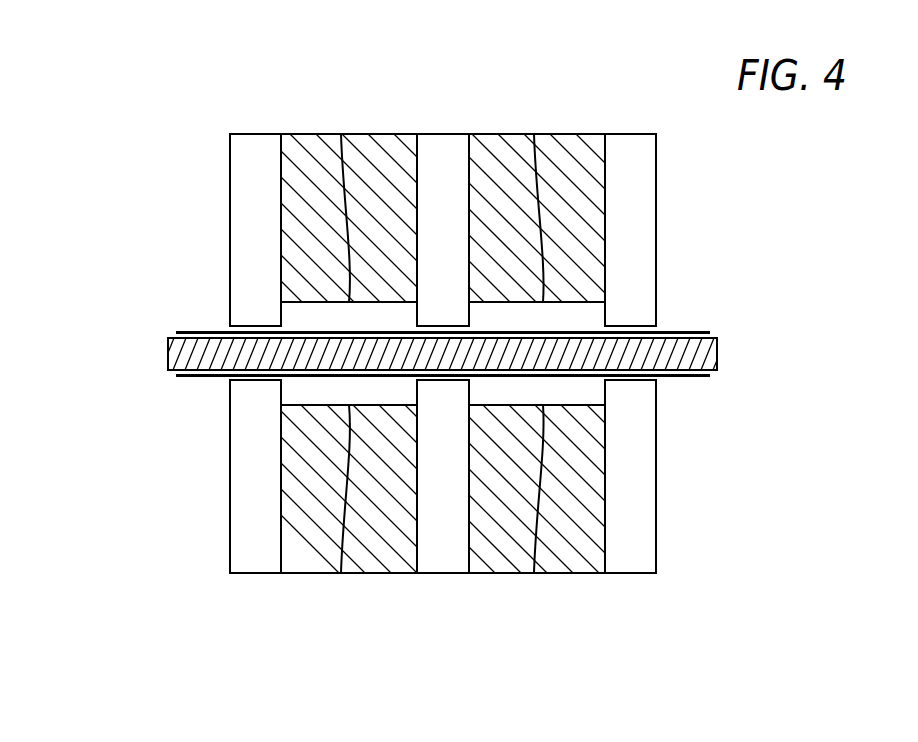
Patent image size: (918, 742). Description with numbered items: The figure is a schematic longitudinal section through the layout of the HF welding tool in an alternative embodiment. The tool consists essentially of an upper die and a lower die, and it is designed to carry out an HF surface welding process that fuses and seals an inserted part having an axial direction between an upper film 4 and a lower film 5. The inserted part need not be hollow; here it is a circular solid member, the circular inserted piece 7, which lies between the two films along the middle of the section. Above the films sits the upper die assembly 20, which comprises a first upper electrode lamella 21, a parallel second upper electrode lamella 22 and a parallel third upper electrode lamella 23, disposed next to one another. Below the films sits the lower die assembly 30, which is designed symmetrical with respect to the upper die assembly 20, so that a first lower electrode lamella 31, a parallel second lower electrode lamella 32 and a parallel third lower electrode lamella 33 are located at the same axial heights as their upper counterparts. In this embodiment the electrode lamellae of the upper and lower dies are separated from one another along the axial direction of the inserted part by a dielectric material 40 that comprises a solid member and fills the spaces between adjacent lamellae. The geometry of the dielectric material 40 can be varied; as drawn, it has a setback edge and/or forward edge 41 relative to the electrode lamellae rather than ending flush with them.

The upper film 4 is at (687, 332).
The lower film 5 is at (692, 376).
The circular inserted piece 7 is at (717, 352).
The upper die assembly 20 is at (178, 229).
The first upper electrode lamella 21 is at (253, 134).
The second upper electrode lamella 22 is at (443, 134).
The third upper electrode lamella 23 is at (637, 134).
The lower die assembly 30 is at (178, 505).
The first lower electrode lamella 31 is at (253, 573).
The second lower electrode lamella 32 is at (443, 573).
The third lower electrode lamella 33 is at (637, 573).
The dielectric material 40 is at (304, 114).
The setback edge and/or forward edge 41 is at (341, 134).